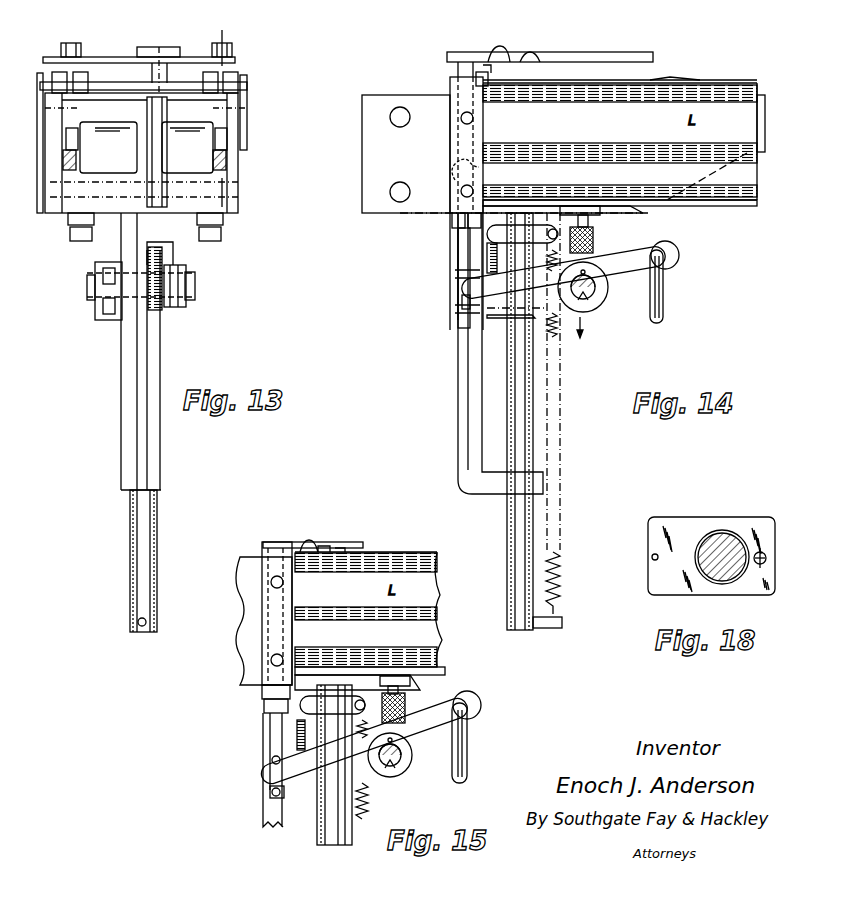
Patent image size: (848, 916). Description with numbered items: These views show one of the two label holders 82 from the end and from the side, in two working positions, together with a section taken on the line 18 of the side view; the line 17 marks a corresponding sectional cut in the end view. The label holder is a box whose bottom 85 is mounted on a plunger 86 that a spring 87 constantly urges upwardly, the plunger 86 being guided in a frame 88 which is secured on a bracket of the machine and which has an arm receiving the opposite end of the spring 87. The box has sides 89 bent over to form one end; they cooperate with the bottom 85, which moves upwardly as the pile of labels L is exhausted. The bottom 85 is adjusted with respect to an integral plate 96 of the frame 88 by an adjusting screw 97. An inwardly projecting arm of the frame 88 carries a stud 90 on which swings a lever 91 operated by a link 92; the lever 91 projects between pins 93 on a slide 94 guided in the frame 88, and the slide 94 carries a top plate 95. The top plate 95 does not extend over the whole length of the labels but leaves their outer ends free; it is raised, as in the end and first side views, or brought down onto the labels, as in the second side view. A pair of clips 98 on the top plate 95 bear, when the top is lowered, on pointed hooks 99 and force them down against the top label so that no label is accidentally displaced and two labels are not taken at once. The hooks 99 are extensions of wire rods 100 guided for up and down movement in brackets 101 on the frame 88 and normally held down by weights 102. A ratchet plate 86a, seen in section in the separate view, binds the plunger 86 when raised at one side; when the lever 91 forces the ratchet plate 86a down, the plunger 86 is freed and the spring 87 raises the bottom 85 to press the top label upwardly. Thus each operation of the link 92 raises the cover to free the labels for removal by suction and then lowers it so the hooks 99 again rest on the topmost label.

In FIG. 13, the section line 17 is at (224, 30).
In FIG. 14, the section line 18 is at (548, 322).
In FIG. 14, the label holder 82 is at (620, 142).
In FIG. 13, the bottom 85 is at (245, 190).
In FIG. 14, the bottom 85 is at (733, 206).
In FIG. 15, the bottom 85 is at (441, 670).
In FIG. 13, the plunger 86 is at (158, 513).
In FIG. 14, the plunger 86 is at (512, 508).
In FIG. 15, the plunger 86 is at (318, 838).
In FIG. 18, the plunger 86 is at (718, 532).
In FIG. 14, the ratchet plate 86a is at (490, 318).
In FIG. 18, the ratchet plate 86a is at (660, 588).
In FIG. 14, the spring 87 is at (560, 563).
In FIG. 15, the spring 87 is at (368, 792).
In FIG. 13, the frame 88 is at (73, 205).
In FIG. 14, the frame 88 is at (458, 472).
In FIG. 15, the frame 88 is at (246, 608).
In FIG. 13, the sides 89 is at (38, 100).
In FIG. 14, the sides 89 is at (670, 78).
In FIG. 15, the sides 89 is at (445, 680).
In FIG. 13, the stud 90 is at (196, 285).
In FIG. 14, the stud 90 is at (587, 298).
In FIG. 15, the stud 90 is at (400, 762).
In FIG. 13, the lever 91 is at (180, 265).
In FIG. 14, the lever 91 is at (645, 252).
In FIG. 15, the lever 91 is at (452, 740).
In FIG. 14, the link 92 is at (664, 287).
In FIG. 15, the link 92 is at (467, 752).
In FIG. 14, the pins 93 is at (467, 307).
In FIG. 15, the pins 93 is at (275, 758).
In FIG. 13, the slide 94 is at (160, 308).
In FIG. 14, the slide 94 is at (462, 253).
In FIG. 15, the slide 94 is at (270, 733).
In FIG. 13, the top plate 95 is at (110, 57).
In FIG. 14, the top plate 95 is at (478, 52).
In FIG. 15, the top plate 95 is at (355, 542).
In FIG. 14, the plate 96 is at (603, 214).
In FIG. 15, the plate 96 is at (407, 690).
In FIG. 14, the adjusting screw 97 is at (597, 253).
In FIG. 15, the adjusting screw 97 is at (402, 716).
In FIG. 13, the clips 98 is at (71, 43).
In FIG. 14, the clips 98 is at (505, 50).
In FIG. 15, the clips 98 is at (306, 541).
In FIG. 14, the hooks 99 is at (485, 86).
In FIG. 15, the hooks 99 is at (316, 548).
In FIG. 13, the wire rods 100 is at (76, 113).
In FIG. 14, the wire rods 100 is at (456, 92).
In FIG. 13, the brackets 101 is at (78, 146).
In FIG. 13, the weights 102 is at (64, 168).